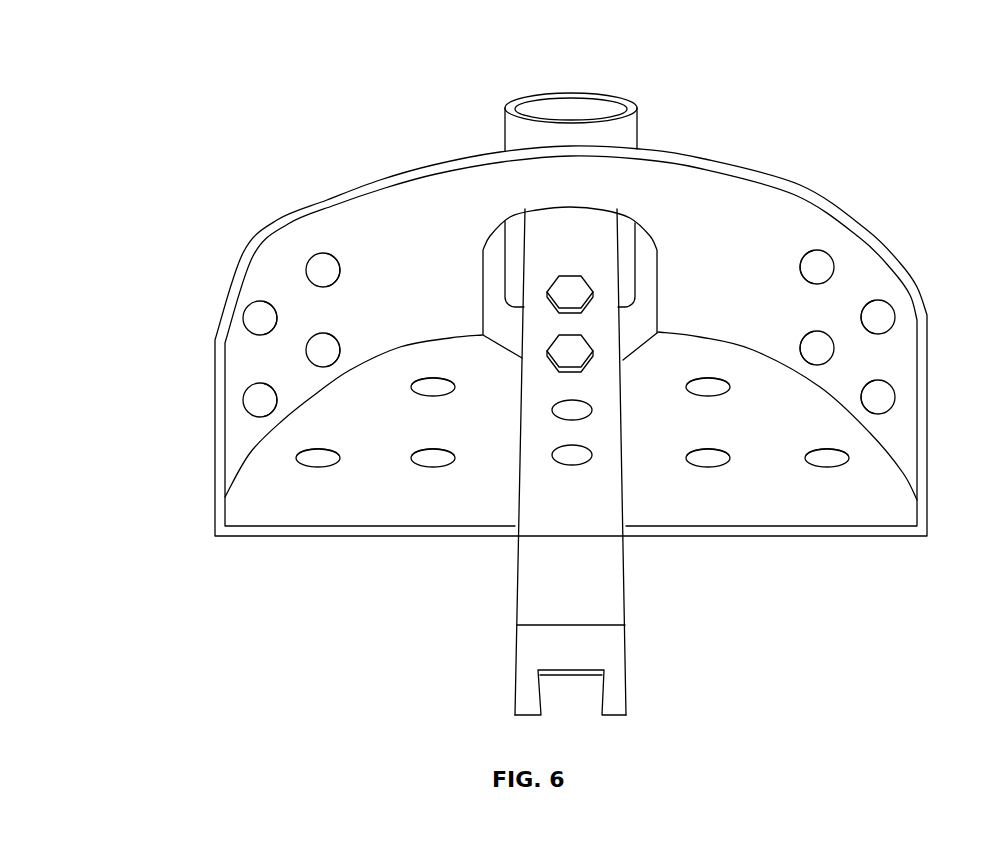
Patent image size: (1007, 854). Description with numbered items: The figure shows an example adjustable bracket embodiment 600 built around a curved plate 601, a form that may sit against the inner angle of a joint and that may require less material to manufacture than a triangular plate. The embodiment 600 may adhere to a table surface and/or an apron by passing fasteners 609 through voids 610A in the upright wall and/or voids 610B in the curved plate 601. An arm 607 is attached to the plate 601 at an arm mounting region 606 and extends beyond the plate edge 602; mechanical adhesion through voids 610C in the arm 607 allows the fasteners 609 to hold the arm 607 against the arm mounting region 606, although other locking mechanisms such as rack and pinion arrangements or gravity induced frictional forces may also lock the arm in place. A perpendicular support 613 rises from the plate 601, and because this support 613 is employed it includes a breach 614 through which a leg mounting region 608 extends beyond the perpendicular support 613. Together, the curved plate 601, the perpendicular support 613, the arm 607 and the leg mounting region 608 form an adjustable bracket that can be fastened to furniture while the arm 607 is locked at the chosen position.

The embodiment 600 is at (99, 60).
The curved plate 601 is at (383, 436).
The plate edge 602 is at (635, 350).
The arm mounting region 606 is at (576, 700).
The arm 607 is at (590, 588).
The leg mounting region 608 is at (628, 135).
The fasteners 609 is at (572, 350).
The voids 610A is at (320, 272).
The voids 610B is at (435, 458).
The voids 610C is at (572, 410).
The perpendicular support 613 is at (590, 193).
The breach 614 is at (633, 313).